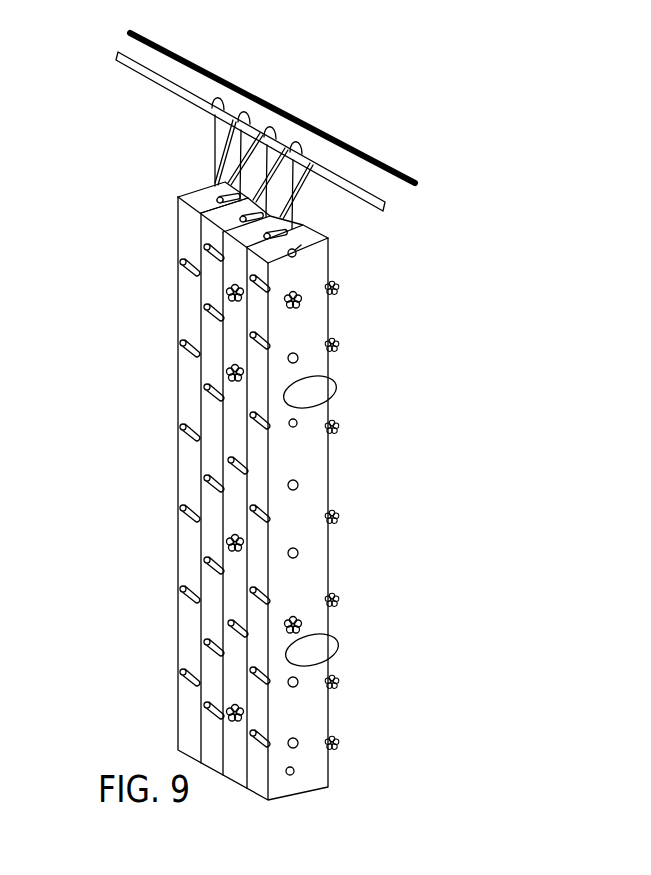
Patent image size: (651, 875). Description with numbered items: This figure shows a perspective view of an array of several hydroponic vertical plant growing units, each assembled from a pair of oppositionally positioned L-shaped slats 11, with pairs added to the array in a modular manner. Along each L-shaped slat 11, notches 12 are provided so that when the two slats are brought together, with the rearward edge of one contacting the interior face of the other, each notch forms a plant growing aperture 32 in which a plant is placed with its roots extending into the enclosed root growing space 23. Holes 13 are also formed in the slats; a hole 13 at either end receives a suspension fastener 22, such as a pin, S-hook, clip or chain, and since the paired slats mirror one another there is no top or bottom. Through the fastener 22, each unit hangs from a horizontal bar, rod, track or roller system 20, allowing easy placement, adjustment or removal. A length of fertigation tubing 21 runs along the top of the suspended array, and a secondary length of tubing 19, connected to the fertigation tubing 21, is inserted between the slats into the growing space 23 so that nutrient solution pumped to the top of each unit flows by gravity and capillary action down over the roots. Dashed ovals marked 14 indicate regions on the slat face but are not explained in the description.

The L-shaped slat 11 is at (318, 312).
The notch 12 is at (274, 427).
The hole 13 is at (300, 253).
The planting zone 14 is at (342, 397).
The secondary length of tubing 19 is at (318, 214).
The horizontal bar, rod, track or roller system 20 is at (117, 68).
The fertigation tubing 21 is at (239, 78).
The fastener 22 is at (210, 141).
The growing space 23 is at (203, 192).
The plant growing aperture 32 is at (184, 265).